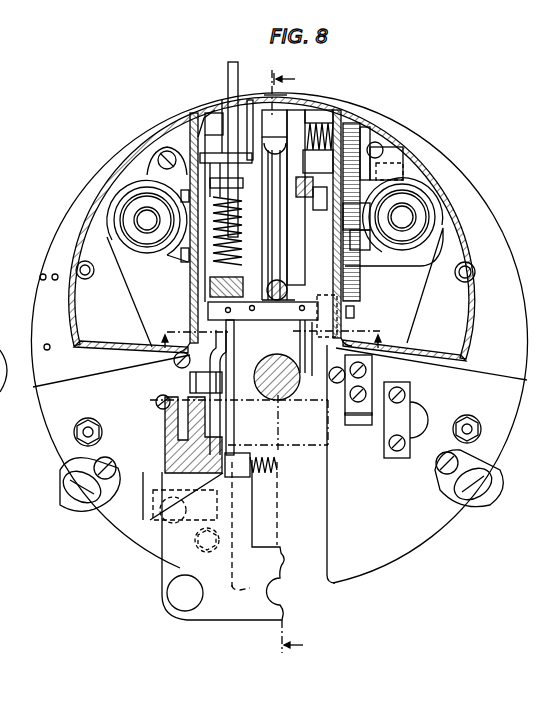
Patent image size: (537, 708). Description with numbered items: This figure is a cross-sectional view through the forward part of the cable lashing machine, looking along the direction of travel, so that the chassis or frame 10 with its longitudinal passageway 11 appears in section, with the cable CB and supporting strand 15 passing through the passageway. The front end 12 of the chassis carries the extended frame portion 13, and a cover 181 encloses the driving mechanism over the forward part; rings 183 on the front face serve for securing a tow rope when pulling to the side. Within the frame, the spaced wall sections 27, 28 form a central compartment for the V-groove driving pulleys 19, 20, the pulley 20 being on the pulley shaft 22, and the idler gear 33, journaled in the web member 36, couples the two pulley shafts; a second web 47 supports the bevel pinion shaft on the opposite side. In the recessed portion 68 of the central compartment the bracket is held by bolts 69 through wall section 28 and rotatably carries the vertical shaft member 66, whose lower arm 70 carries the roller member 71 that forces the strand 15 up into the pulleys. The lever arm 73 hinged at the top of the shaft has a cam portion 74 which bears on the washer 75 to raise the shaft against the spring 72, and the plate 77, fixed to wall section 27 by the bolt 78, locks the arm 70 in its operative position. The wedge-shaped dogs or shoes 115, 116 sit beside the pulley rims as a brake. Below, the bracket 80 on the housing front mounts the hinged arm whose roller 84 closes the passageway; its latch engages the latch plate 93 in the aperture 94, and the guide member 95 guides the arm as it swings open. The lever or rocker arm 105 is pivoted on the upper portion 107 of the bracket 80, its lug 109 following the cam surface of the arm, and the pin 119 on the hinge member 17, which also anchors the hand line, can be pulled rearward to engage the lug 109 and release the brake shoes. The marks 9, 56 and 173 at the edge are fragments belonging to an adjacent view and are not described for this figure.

The chassis or frame 10 is at (117, 537).
The cover 181 is at (458, 214).
The front end of chassis (housing) 12 is at (400, 553).
The cable guide plate 17 is at (220, 618).
The V-groove driving pulley 20 is at (289, 364).
The pulley shaft 22 is at (275, 335).
The web 47 is at (107, 180).
The web member 36 is at (440, 232).
The wall section 27 is at (347, 270).
The recessed portion 68 is at (159, 153).
The wall section 28 is at (192, 293).
The extended frame portion 13 is at (341, 125).
The idler gear 33 is at (356, 128).
The V-groove driving pulley 19 is at (371, 160).
The wedge-shaped dog or shoe 115 is at (300, 108).
The roller member 71 is at (276, 303).
The strand 15 is at (293, 289).
The lever arm 73 is at (227, 71).
The cam portion 74 is at (252, 100).
The wedge-shaped dog or shoe 116 is at (270, 71).
The washer 75 is at (207, 131).
The vertical shaft member 66 is at (213, 111).
The bolt 69 is at (182, 193).
The spring 72 is at (217, 240).
The plate 77 is at (336, 300).
The bolt 78 is at (353, 310).
The extending arm 70 is at (245, 320).
The lever or rocker arm 105 is at (212, 425).
The bracket 80 is at (189, 381).
The upper portion of bracket 107 is at (177, 384).
The roller 84 is at (303, 443).
The passageway 11 is at (312, 378).
The cable CB is at (277, 394).
The guide member 95 is at (367, 380).
The latch plate 93 is at (392, 425).
The aperture 94 is at (418, 403).
The ring 183 is at (78, 507).
The lug 109 is at (163, 517).
The pin 119 is at (200, 510).
The partial numeral 9 is at (4, 213).
The partial numeral 56 is at (8, 238).
The partial numeral 173 is at (12, 384).